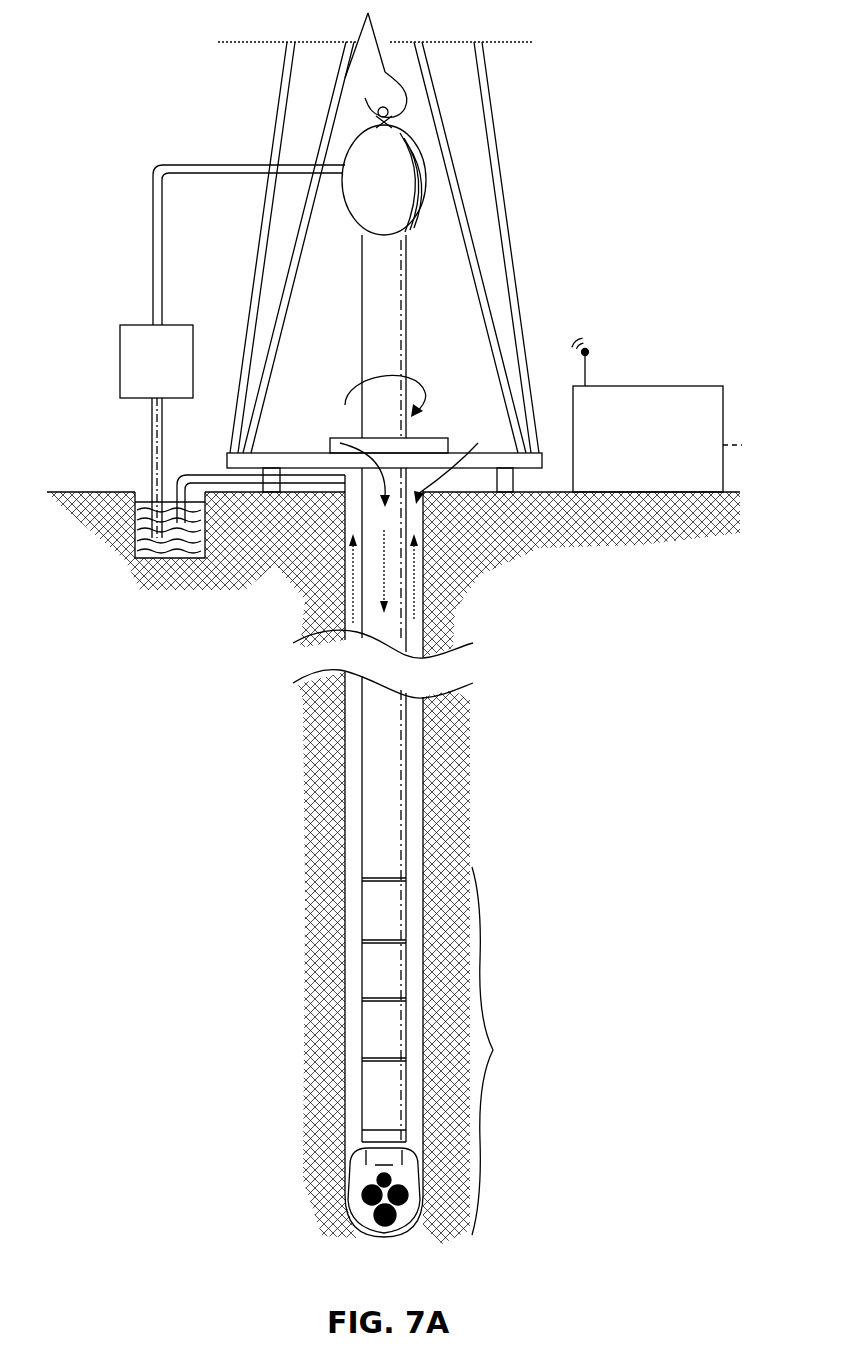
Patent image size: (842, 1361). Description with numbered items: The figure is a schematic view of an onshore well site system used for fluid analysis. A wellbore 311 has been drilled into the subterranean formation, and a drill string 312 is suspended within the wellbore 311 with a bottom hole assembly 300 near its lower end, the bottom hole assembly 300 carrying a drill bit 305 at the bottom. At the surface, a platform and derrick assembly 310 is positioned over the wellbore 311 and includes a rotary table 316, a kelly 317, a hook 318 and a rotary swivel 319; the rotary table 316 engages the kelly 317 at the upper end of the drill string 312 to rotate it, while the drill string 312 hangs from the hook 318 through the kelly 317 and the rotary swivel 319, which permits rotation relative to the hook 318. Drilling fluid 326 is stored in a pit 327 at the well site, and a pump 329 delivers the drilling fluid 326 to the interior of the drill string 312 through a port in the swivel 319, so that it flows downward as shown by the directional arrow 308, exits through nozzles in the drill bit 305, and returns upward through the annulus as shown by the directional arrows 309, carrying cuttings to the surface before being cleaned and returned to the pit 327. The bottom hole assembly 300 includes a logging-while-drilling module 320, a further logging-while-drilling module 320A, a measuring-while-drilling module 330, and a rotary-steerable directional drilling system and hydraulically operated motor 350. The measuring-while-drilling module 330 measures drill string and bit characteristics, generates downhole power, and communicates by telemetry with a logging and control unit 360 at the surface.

The bottom hole assembly 300 is at (442, 852).
The drill bit 305 is at (355, 1180).
The directional arrow 308 is at (387, 580).
The directional arrows 309 is at (350, 558).
The platform and derrick assembly 310 is at (518, 140).
The wellbore 311 is at (454, 457).
The drill string 312 is at (330, 442).
The rotary table 316 is at (411, 393).
The kelly 317 is at (367, 432).
The hook 318 is at (380, 78).
The rotary swivel 319 is at (352, 212).
The logging-while-drilling module 320 is at (370, 908).
The logging-while-drilling module 320A is at (370, 1030).
The drilling fluid 326 is at (142, 572).
The pit 327 is at (142, 488).
The pump 329 is at (124, 398).
The measuring-while-drilling module 330 is at (370, 968).
The rotary-steerable directional drilling system and hydraulically operated motor 350 is at (370, 1100).
The logging and control unit 360 is at (703, 386).